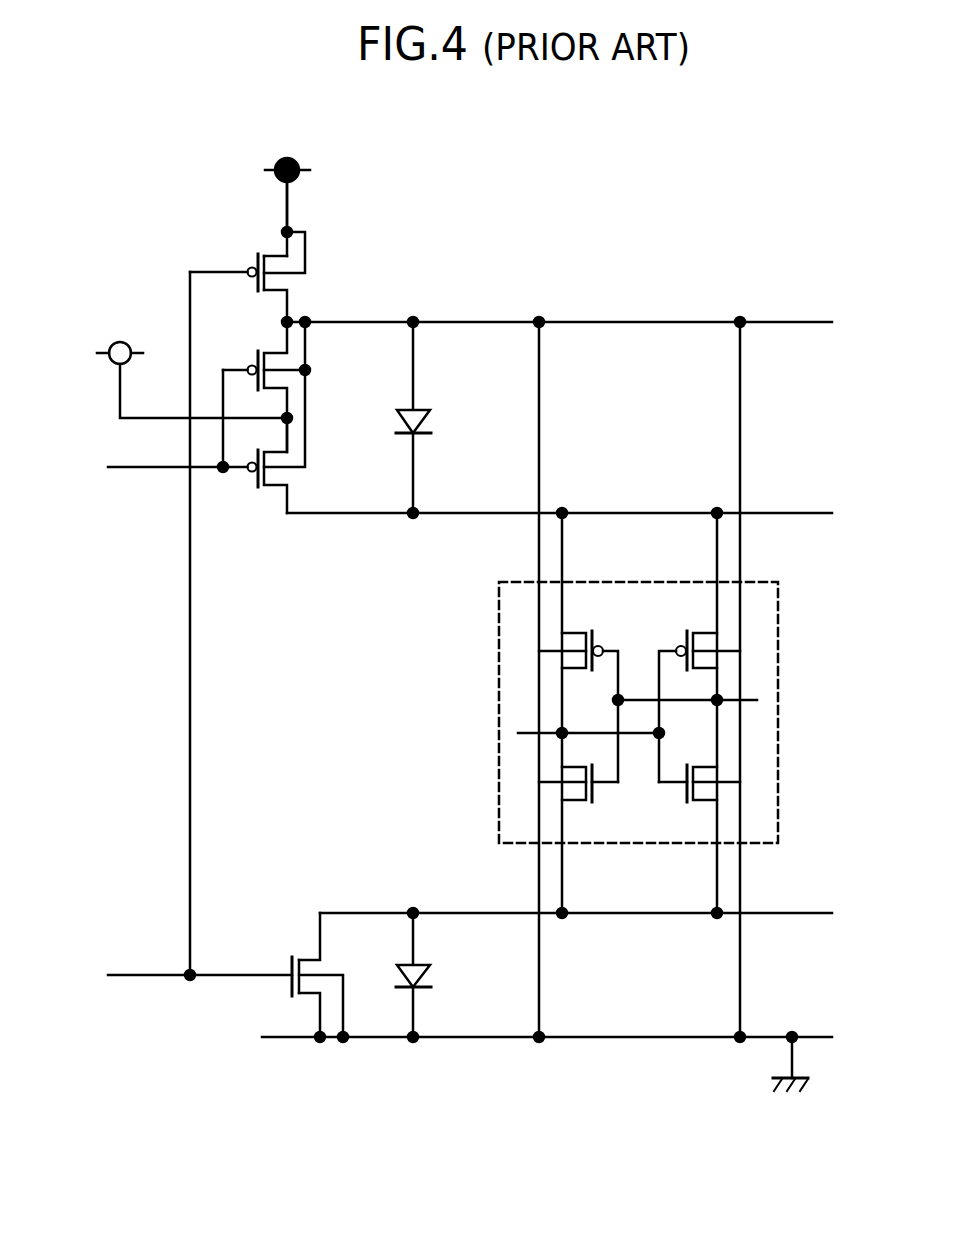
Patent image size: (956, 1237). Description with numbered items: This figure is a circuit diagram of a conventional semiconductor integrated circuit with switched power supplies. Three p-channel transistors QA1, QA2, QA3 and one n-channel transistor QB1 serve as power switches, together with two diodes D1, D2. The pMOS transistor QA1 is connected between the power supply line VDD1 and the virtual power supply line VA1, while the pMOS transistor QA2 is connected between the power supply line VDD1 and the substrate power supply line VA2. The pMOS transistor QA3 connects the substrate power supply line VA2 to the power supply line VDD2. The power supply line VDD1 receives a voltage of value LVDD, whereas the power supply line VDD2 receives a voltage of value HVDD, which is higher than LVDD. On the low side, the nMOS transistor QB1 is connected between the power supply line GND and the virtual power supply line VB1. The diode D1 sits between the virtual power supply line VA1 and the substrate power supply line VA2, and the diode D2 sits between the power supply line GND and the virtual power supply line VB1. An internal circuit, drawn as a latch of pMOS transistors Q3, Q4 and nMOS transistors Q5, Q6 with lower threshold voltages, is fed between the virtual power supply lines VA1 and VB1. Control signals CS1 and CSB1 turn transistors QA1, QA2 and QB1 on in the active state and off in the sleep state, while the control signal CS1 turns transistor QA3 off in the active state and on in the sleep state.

The voltage value HVDD is at (326, 194).
The power supply line VDD2 is at (289, 204).
The pMOS transistor QA3 is at (247, 599).
The pMOS transistor QA2 is at (266, 394).
The pMOS transistor QA1 is at (257, 464).
The voltage value LVDD is at (85, 353).
The power supply line VDD1 is at (118, 397).
The control signal CSB1 is at (178, 452).
The substrate power supply line VA2 is at (557, 663).
The virtual power supply line VA1 is at (559, 698).
The diode D1 is at (434, 417).
The pMOS transistor Q3 is at (648, 692).
The pMOS transistor Q4 is at (629, 692).
The nMOS transistor Q5 is at (578, 798).
The nMOS transistor Q6 is at (699, 798).
The virtual power supply line VB1 is at (576, 900).
The control signal CS1 is at (200, 962).
The nMOS transistor QB1 is at (308, 977).
The diode D2 is at (431, 975).
The power supply line GND is at (547, 1047).